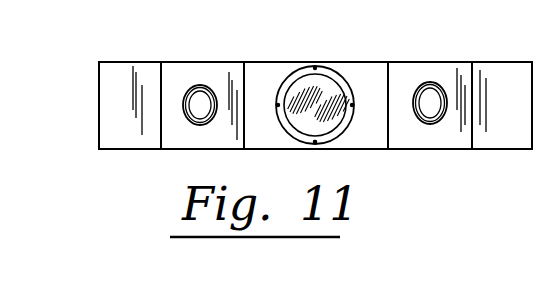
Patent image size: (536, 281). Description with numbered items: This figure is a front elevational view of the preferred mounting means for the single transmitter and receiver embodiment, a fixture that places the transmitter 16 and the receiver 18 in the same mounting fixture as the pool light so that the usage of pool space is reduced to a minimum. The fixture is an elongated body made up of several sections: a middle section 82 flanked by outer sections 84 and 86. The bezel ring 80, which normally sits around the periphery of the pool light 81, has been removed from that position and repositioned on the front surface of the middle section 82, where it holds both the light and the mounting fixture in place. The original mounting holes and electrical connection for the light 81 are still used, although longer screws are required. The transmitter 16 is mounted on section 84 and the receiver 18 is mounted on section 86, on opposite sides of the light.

The transmitter 16 is at (189, 86).
The receiver 18 is at (440, 120).
The bezel ring 80 is at (335, 68).
The pool light 81 is at (320, 142).
The middle section 82 is at (283, 65).
The section 84 is at (113, 125).
The section 86 is at (527, 78).